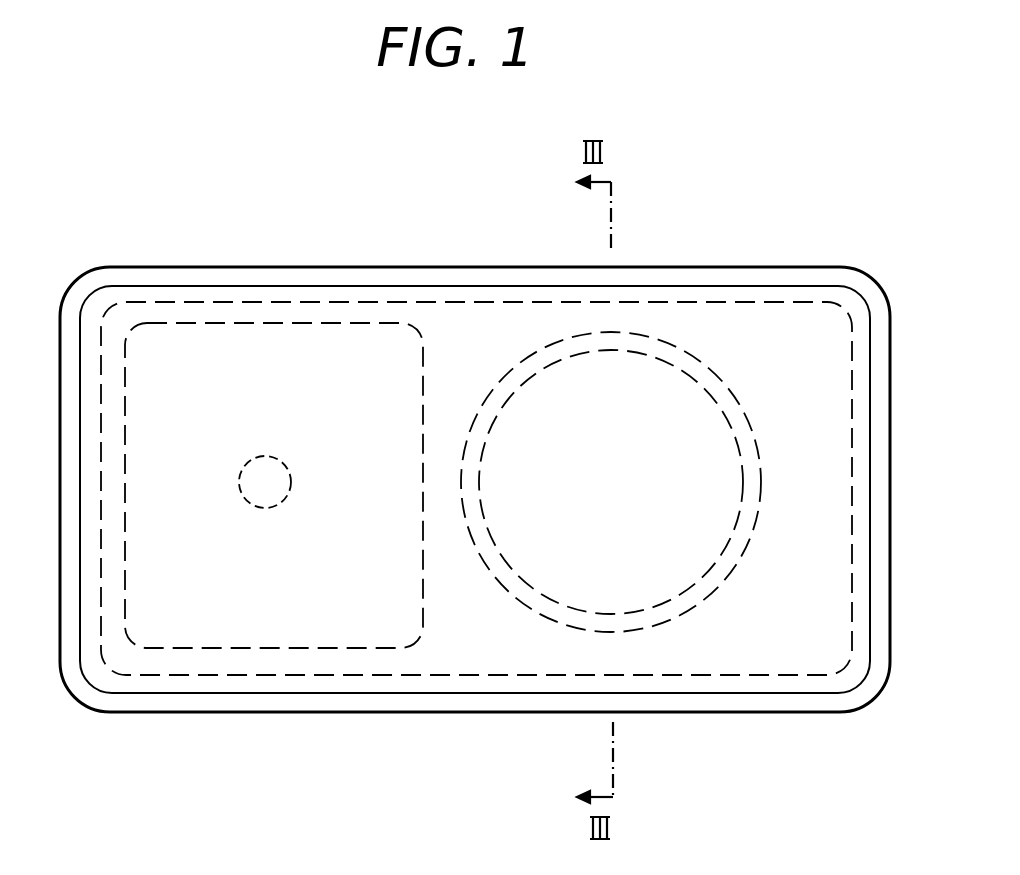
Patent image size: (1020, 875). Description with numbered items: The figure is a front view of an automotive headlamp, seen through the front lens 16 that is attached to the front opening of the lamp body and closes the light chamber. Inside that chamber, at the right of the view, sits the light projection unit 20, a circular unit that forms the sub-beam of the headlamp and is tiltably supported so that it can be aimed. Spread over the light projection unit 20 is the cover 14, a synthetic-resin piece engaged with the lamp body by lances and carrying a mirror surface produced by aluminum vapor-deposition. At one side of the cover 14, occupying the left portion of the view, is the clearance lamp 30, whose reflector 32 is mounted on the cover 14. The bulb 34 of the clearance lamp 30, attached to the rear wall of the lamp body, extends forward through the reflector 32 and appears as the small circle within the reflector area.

The cover 14 is at (484, 325).
The front lens 16 is at (478, 645).
The light projection unit 20 is at (657, 400).
The clearance lamp 30 is at (207, 368).
The reflector 32 is at (237, 632).
The bulb 34 is at (268, 465).